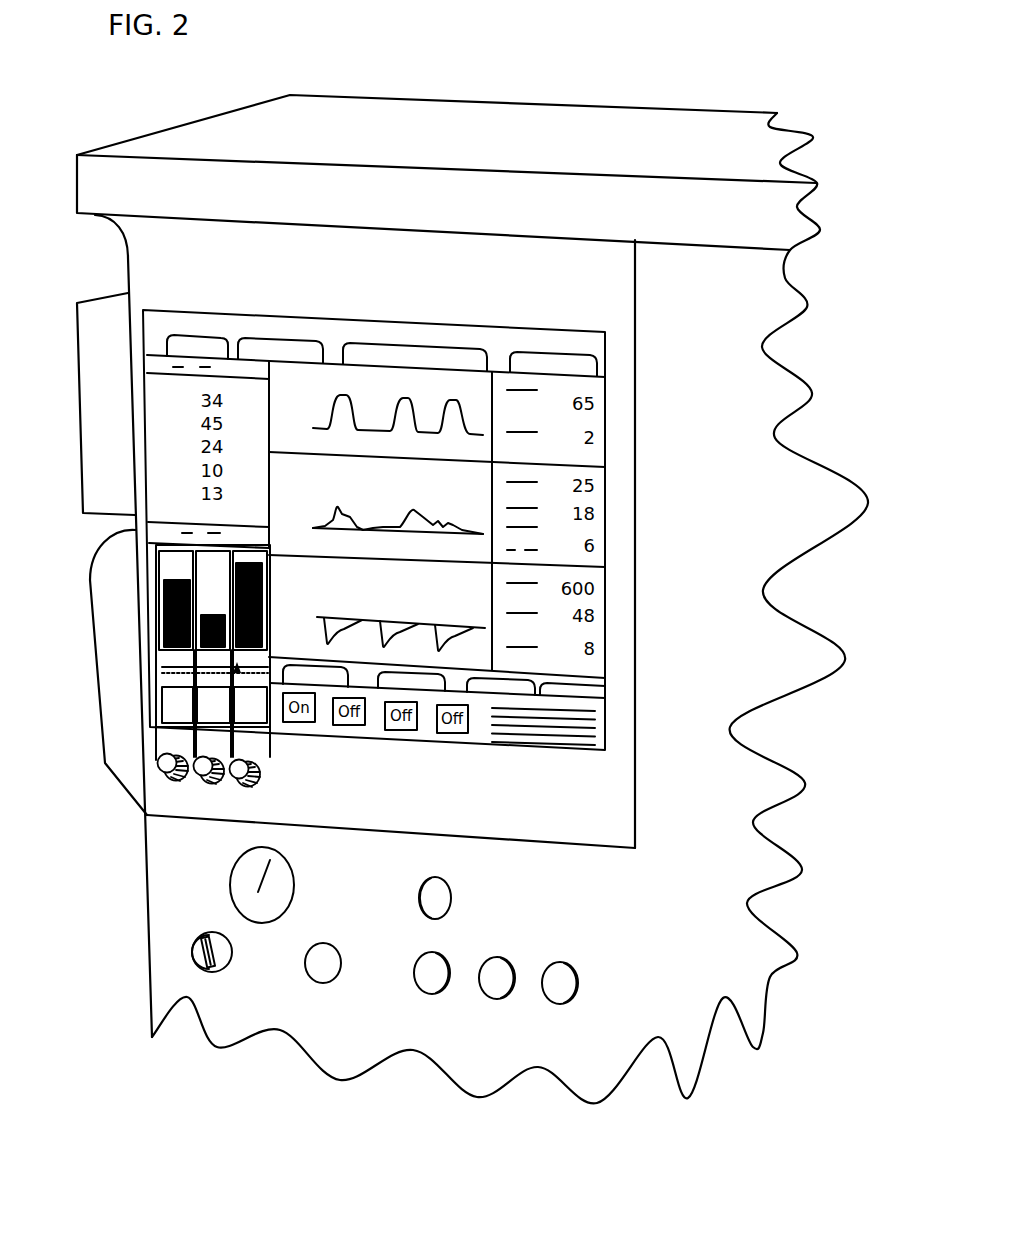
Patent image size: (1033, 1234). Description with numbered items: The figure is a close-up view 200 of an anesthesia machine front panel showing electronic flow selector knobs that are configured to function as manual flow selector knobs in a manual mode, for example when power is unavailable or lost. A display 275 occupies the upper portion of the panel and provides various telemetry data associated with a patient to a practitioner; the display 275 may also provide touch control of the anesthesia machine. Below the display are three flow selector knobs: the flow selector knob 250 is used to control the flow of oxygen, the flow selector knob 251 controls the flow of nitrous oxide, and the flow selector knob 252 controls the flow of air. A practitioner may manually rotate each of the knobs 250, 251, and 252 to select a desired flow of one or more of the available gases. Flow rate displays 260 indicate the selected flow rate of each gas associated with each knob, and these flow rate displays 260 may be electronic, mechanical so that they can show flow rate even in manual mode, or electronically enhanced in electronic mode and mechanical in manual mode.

The close-up view 200 is at (711, 48).
The flow selector knob 250 is at (158, 760).
The flow selector knob 251 is at (208, 788).
The flow selector knob 252 is at (262, 768).
The flow rate displays 260 is at (160, 598).
The display 275 is at (316, 385).